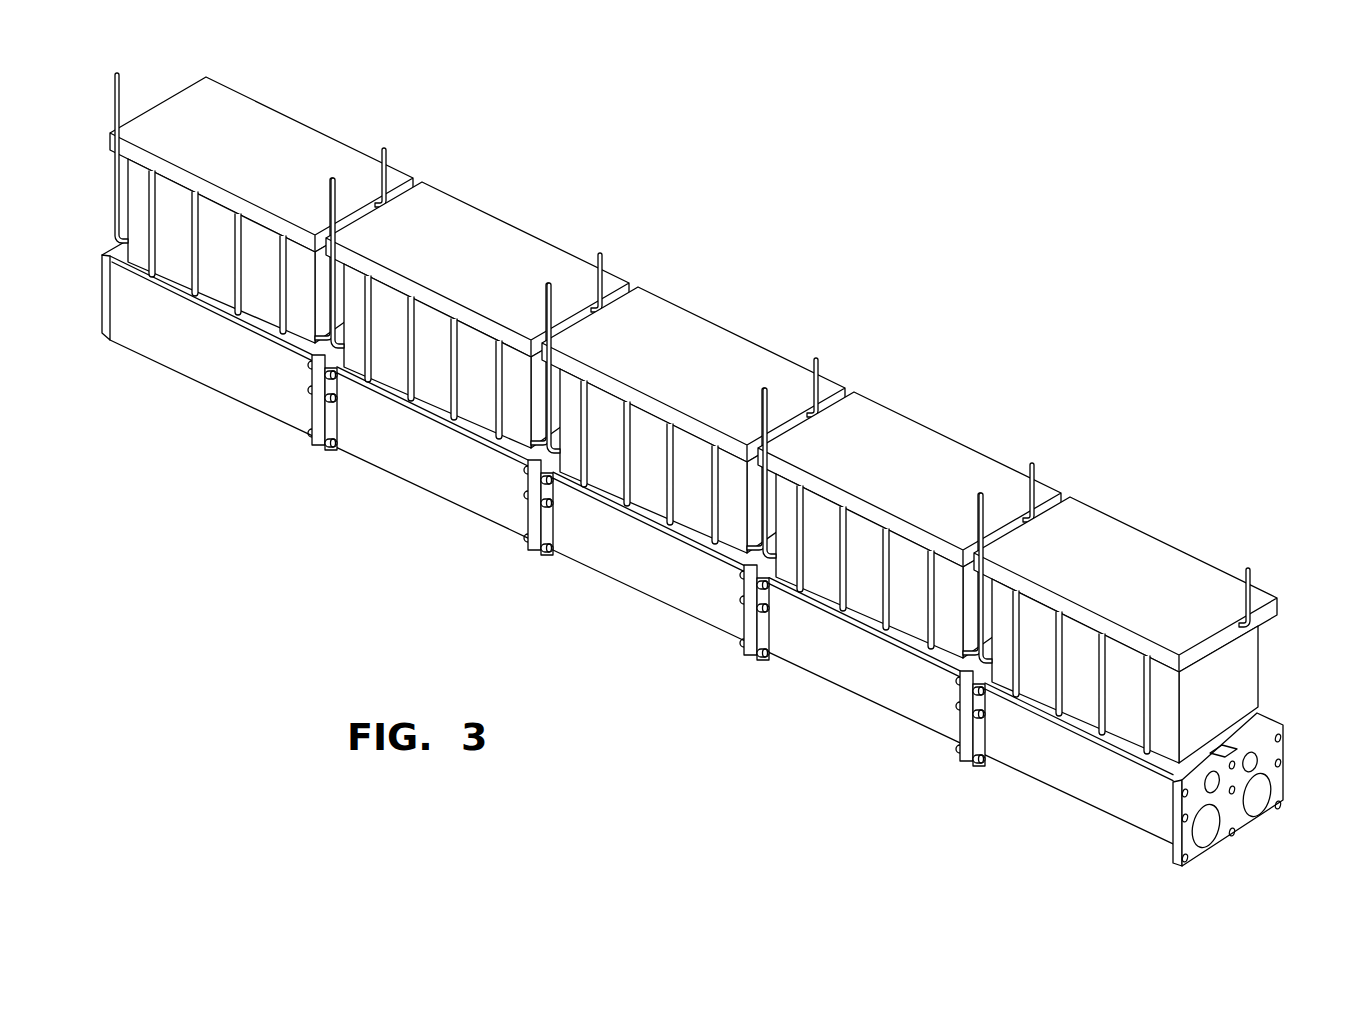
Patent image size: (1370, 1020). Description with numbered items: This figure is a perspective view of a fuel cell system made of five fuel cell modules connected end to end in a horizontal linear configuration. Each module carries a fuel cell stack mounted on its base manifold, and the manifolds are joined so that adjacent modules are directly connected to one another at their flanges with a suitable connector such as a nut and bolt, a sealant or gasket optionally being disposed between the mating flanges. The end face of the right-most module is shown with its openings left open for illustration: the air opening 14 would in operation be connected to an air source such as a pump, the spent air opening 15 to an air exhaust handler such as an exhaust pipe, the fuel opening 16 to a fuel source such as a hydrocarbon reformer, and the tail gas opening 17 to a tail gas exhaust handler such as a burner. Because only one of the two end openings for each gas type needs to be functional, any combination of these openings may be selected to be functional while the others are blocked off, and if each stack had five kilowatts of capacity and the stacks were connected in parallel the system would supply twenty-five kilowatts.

The air opening 14 is at (1250, 762).
The spent air opening 15 is at (1212, 782).
The fuel opening 16 is at (1257, 795).
The tail gas opening 17 is at (1206, 826).